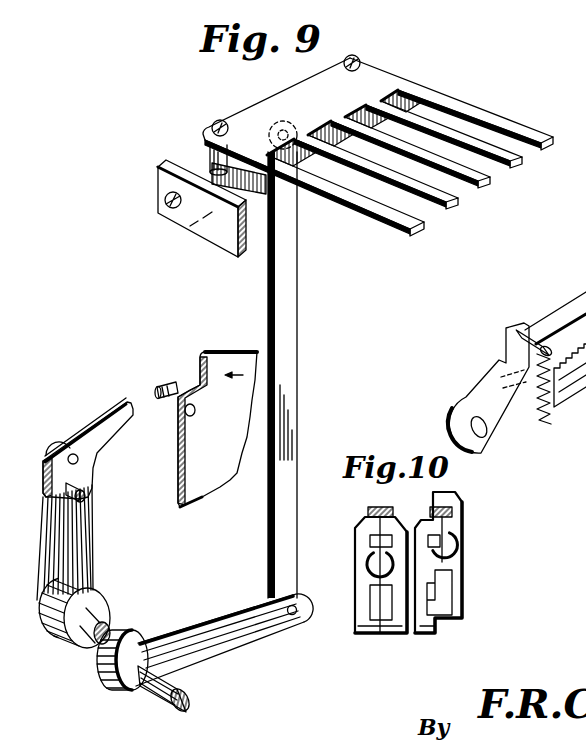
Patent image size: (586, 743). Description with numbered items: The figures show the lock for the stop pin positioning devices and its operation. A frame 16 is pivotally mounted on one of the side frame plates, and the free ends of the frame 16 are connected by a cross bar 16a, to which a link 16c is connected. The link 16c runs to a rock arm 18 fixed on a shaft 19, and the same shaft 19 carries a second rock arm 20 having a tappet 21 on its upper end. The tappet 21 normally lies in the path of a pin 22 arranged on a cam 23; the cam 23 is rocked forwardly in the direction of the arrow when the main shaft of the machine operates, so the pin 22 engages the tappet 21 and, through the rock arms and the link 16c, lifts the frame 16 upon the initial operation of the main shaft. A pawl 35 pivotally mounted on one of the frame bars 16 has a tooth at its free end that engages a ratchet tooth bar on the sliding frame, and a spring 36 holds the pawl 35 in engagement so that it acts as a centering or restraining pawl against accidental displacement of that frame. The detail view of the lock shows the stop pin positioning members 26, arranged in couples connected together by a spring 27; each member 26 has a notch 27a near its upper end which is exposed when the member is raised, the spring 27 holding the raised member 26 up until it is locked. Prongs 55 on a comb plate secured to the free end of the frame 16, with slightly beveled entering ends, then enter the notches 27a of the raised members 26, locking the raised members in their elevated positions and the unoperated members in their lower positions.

In FIG. 9, the frame 16 is at (217, 233).
In FIG. 9, the cross bar 16a is at (203, 166).
In FIG. 9, the link 16c is at (290, 320).
In FIG. 9, the rock arm 18 is at (251, 635).
In FIG. 9, the shaft 19 is at (162, 703).
In FIG. 9, the rock arm 20 is at (84, 537).
In FIG. 9, the tappet 21 is at (104, 428).
In FIG. 9, the pin 22 is at (170, 388).
In FIG. 9, the cam 23 is at (217, 429).
In FIG. 10, the stop pin positioning member 26 is at (462, 595).
In FIG. 10, the spring 27 is at (462, 551).
In FIG. 10, the notch 27a is at (370, 542).
In FIG. 9, the pawl 35 is at (574, 300).
In FIG. 9, the spring 36 is at (536, 425).
In FIG. 9, the prongs 55 is at (419, 224).
In FIG. 10, the prongs 55 is at (430, 509).